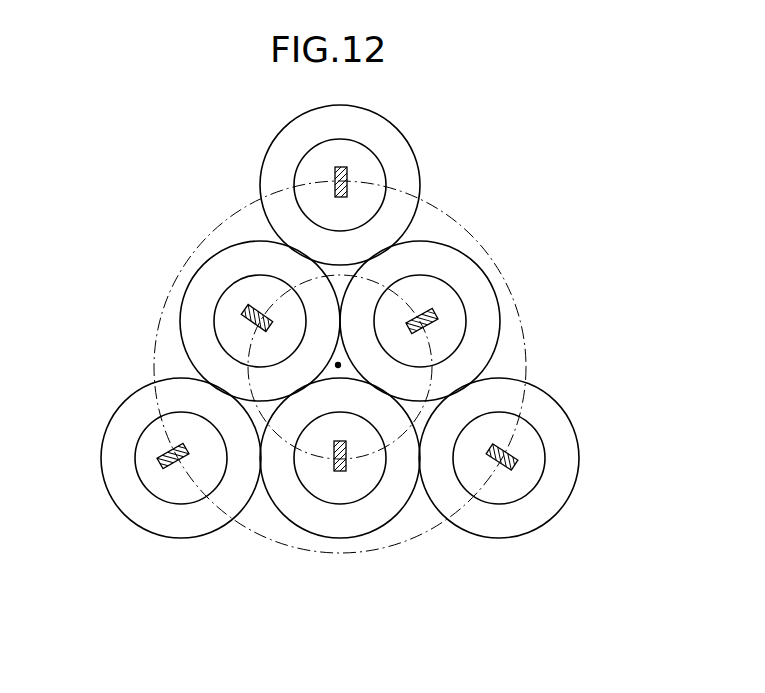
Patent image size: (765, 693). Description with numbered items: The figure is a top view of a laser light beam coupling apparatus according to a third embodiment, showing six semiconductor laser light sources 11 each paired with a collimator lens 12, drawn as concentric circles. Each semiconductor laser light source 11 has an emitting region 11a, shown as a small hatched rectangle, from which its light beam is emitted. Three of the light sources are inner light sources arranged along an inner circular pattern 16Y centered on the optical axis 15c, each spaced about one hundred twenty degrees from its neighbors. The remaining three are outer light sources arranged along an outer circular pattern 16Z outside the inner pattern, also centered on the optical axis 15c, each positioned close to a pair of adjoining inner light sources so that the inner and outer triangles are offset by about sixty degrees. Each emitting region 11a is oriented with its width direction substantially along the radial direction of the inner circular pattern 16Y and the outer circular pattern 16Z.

The semiconductor laser light source 11 is at (305, 493).
The emitting region 11a is at (175, 475).
The collimator lens 12 is at (345, 538).
The optical axis 15c is at (336, 365).
The inner circular pattern 16Y is at (412, 425).
The outer circular pattern 16Z is at (402, 541).